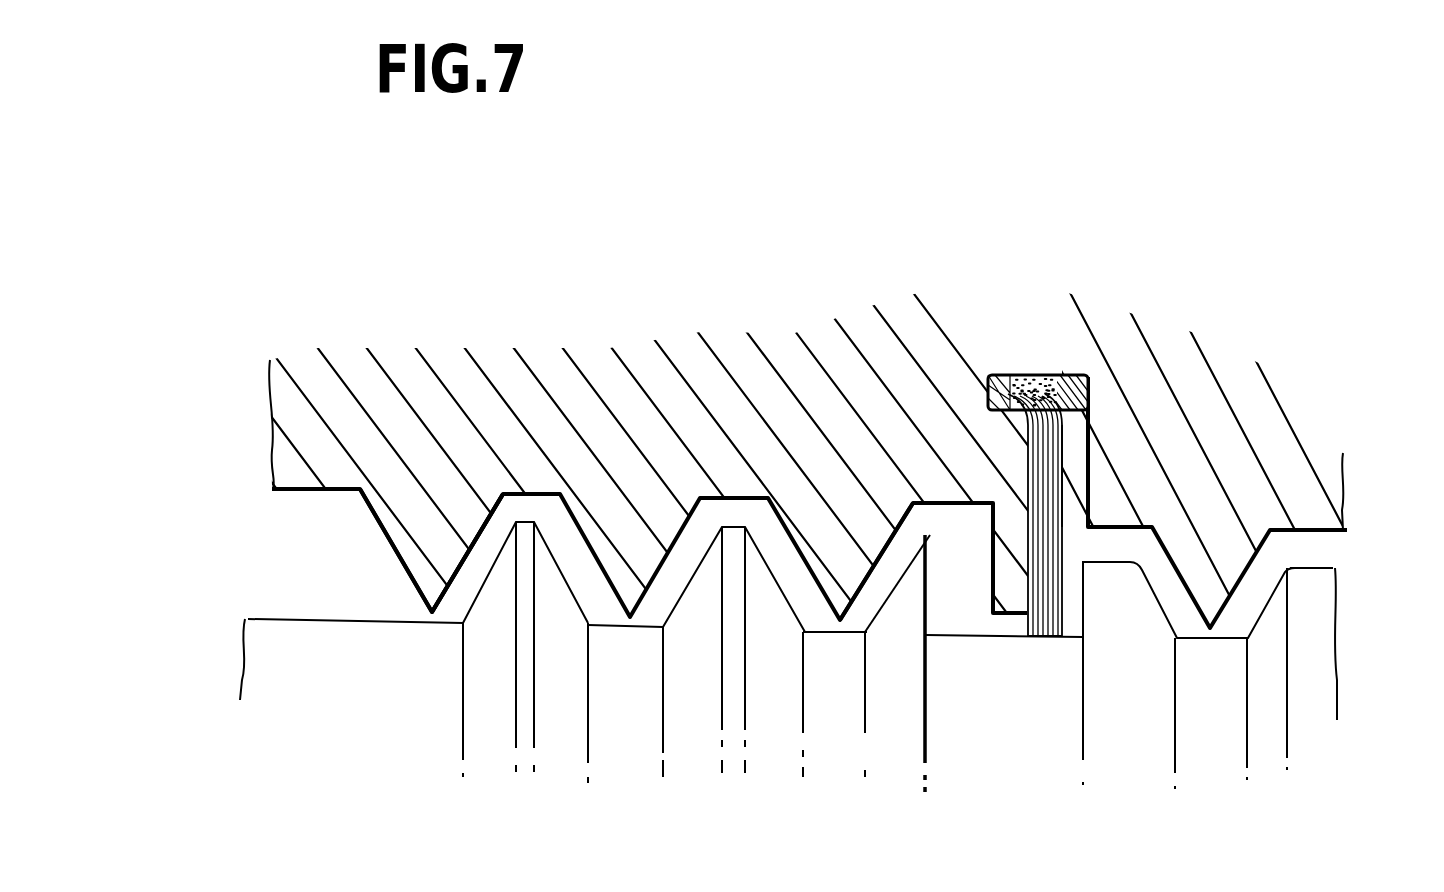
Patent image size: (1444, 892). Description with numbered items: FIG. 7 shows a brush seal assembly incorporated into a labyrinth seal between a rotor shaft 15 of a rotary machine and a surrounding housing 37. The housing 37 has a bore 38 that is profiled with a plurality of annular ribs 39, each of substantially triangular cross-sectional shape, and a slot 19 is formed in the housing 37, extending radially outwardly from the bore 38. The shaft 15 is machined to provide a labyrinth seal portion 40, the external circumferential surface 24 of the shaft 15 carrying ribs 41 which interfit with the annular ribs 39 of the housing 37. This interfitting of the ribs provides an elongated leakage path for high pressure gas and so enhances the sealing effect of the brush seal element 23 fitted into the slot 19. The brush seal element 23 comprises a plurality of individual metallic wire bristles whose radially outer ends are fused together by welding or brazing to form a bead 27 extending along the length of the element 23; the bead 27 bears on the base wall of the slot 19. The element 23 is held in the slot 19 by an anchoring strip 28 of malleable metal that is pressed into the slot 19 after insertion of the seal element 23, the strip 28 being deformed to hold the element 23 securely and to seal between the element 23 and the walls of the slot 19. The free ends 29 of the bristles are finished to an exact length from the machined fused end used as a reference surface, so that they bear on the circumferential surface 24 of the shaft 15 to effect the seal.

The rotor shaft 15 is at (1313, 668).
The slot 19 is at (1078, 458).
The brush seal element 23 is at (1062, 505).
The external circumferential surface 24 is at (975, 637).
The bead 27 is at (1003, 373).
The anchoring strip 28 is at (1078, 400).
The free ends 29 is at (1046, 637).
The housing 37 is at (582, 412).
The bore 38 is at (300, 527).
The annular ribs 39 is at (437, 553).
The labyrinth seal portion 40 is at (495, 635).
The ribs 41 is at (753, 553).